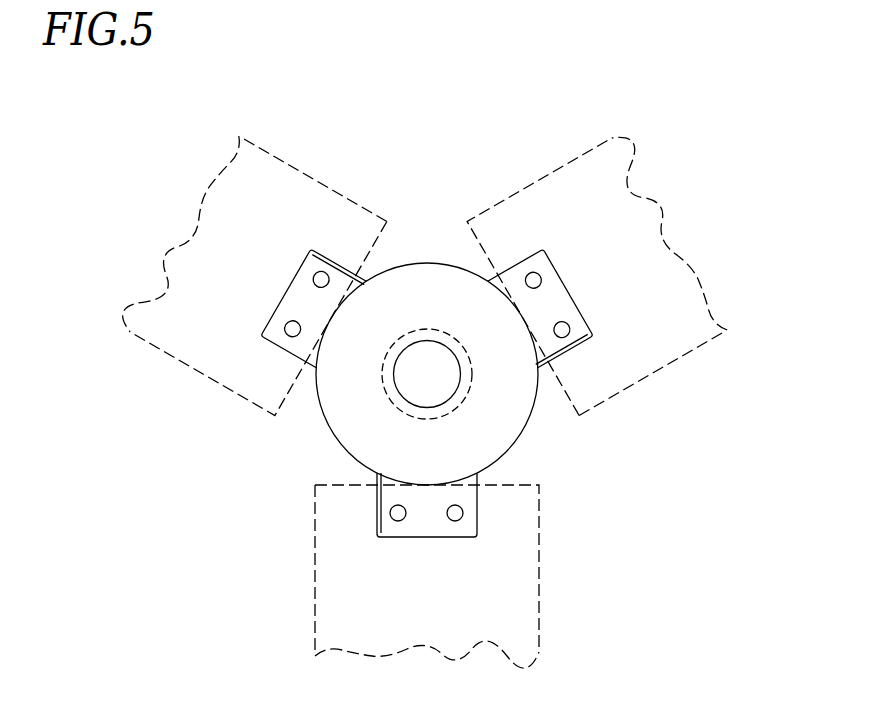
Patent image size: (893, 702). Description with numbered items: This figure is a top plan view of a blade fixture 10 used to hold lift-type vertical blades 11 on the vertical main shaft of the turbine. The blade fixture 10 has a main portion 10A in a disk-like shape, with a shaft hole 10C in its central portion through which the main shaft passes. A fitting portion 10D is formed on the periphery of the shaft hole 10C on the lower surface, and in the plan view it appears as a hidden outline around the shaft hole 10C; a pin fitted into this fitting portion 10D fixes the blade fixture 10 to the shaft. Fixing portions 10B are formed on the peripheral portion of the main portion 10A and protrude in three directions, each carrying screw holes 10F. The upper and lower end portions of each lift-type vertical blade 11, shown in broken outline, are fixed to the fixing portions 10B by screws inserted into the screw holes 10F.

The blade fixture 10 is at (446, 334).
The main portion 10A is at (327, 425).
The fixing portion 10B is at (332, 262).
The shaft hole 10C is at (444, 380).
The fitting portion 10D is at (403, 330).
The screw hole 10F is at (534, 271).
The lift-type vertical blade 11 is at (183, 365).